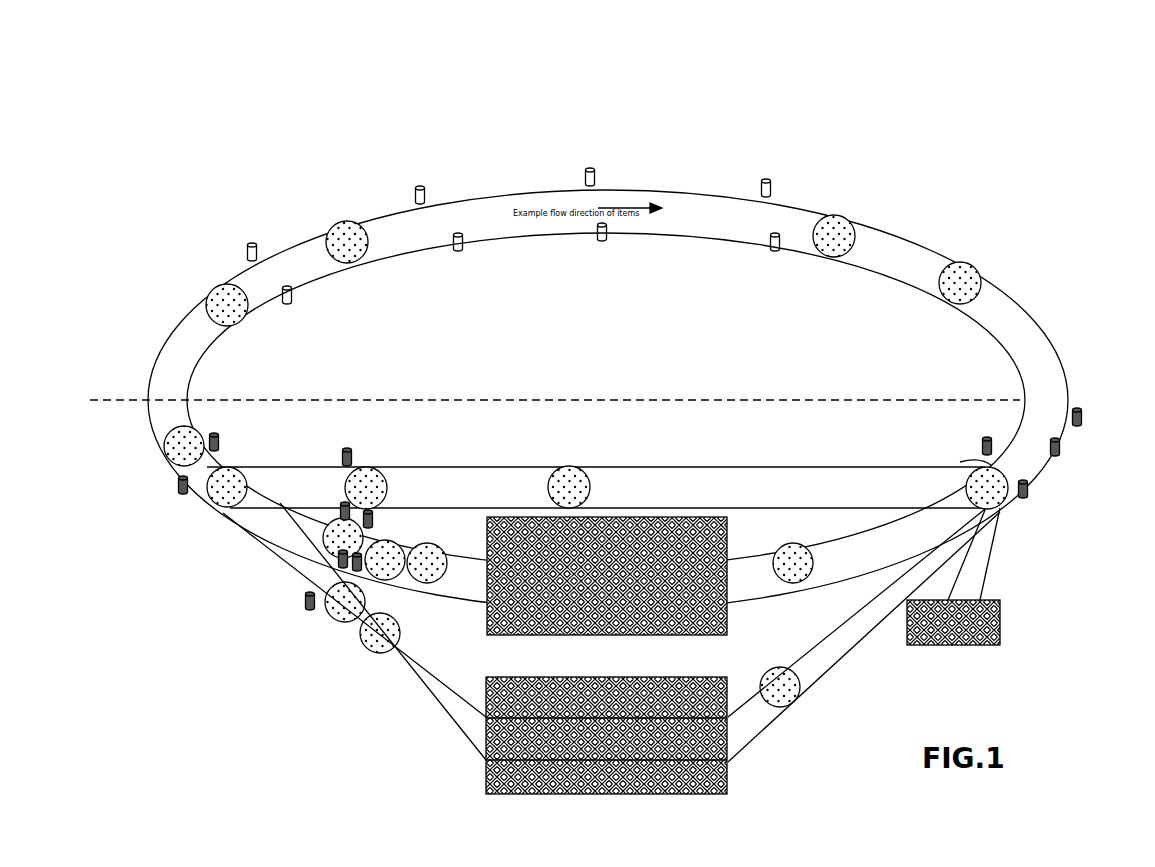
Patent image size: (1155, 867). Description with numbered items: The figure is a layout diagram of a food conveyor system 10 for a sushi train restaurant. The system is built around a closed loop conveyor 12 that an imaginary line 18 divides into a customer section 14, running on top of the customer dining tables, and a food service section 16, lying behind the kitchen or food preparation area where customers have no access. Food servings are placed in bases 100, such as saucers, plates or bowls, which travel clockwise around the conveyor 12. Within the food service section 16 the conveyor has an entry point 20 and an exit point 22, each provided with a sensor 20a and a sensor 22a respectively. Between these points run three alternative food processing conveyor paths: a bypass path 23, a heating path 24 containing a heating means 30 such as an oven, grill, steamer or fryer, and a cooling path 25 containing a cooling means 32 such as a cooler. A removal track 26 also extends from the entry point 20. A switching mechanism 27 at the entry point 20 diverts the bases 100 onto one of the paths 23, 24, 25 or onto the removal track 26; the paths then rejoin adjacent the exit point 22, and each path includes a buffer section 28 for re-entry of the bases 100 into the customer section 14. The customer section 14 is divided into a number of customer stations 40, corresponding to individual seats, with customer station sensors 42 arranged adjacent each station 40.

The food conveyor system 10 is at (933, 176).
The closed loop conveyor 12 is at (180, 353).
The customer section 14 is at (125, 387).
The food service section 16 is at (125, 445).
The imaginary line 18 is at (727, 397).
The entry point 20 is at (1005, 502).
The sensor 20a is at (982, 445).
The exit point 22 is at (213, 493).
The sensor 22a is at (222, 447).
The bypass path 23 is at (725, 493).
The heating path 24 is at (752, 580).
The cooling path 25 is at (833, 637).
The removal track 26 is at (975, 557).
The switching mechanism 27 is at (990, 460).
The buffer section 28 is at (455, 495).
The heating means 30 is at (502, 633).
The cooling means 32 is at (728, 738).
The customer station 40 is at (297, 257).
The customer station sensor 42 is at (422, 185).
The base 100 is at (360, 262).